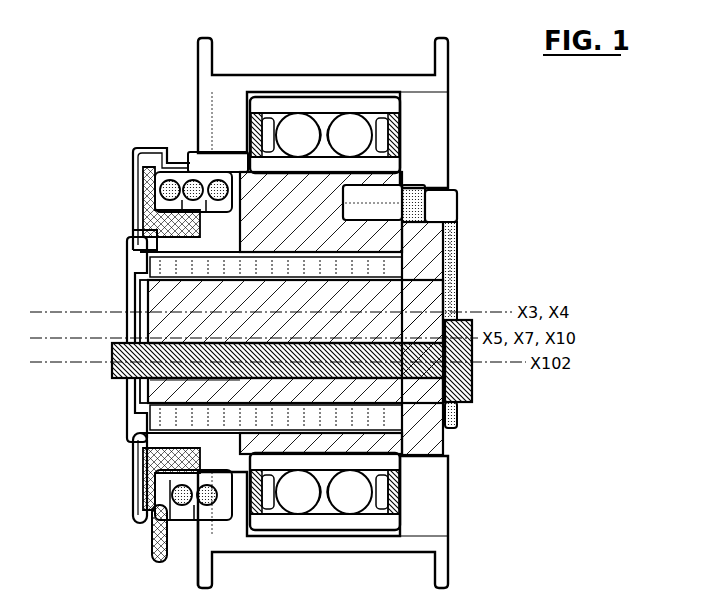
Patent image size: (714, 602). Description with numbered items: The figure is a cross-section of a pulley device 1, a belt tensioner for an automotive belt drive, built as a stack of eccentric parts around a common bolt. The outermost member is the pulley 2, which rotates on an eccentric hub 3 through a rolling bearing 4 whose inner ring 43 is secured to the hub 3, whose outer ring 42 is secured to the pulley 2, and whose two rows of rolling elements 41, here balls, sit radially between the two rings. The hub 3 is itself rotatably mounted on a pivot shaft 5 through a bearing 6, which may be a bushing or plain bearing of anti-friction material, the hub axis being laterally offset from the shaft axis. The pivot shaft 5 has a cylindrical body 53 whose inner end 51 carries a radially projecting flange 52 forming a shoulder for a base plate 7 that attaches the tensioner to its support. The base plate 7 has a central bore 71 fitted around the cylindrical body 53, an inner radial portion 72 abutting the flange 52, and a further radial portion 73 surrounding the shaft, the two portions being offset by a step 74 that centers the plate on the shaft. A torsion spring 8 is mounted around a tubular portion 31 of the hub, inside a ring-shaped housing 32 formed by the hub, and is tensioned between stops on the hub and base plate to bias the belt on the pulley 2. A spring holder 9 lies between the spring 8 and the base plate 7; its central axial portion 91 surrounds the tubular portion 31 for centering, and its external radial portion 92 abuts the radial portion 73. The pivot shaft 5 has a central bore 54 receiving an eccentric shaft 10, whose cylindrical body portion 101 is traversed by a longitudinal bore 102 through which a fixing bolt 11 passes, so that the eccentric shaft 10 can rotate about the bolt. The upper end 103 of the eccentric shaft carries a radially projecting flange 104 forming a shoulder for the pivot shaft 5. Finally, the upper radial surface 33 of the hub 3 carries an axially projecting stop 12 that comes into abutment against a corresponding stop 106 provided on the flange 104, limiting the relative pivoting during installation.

The pulley device 1 is at (112, 72).
The pulley 2 is at (247, 73).
The eccentric hub 3 is at (325, 104).
The rolling bearing 4 is at (410, 113).
The pivot shaft 5 is at (300, 535).
The bearing 6 is at (350, 500).
The base plate 7 is at (136, 487).
The torsion spring 8 is at (168, 178).
The spring holder 9 is at (140, 520).
The eccentric shaft 10 is at (297, 328).
The fixing bolt 11 is at (472, 395).
The stop 12 is at (420, 186).
The tubular portion 31 is at (215, 545).
The ring-shaped housing 32 is at (210, 153).
The upper radial surface 33 is at (405, 168).
The rolling elements 41 is at (344, 145).
The outer ring 42 is at (297, 100).
The inner ring 43 is at (405, 140).
The inner end 51 is at (128, 432).
The flange 52 is at (128, 248).
The cylindrical body 53 is at (390, 513).
The central bore 54 is at (205, 382).
The central bore 71 is at (148, 418).
The inner radial portion 72 is at (160, 268).
The radial portion 73 is at (143, 200).
The step 74 is at (133, 236).
The central axial portion 91 is at (185, 505).
The external radial portion 92 is at (137, 160).
The cylindrical body portion 101 is at (150, 295).
The longitudinal bore 102 is at (455, 415).
The upper end 103 is at (458, 278).
The flange 104 is at (462, 244).
The stop 106 is at (463, 198).